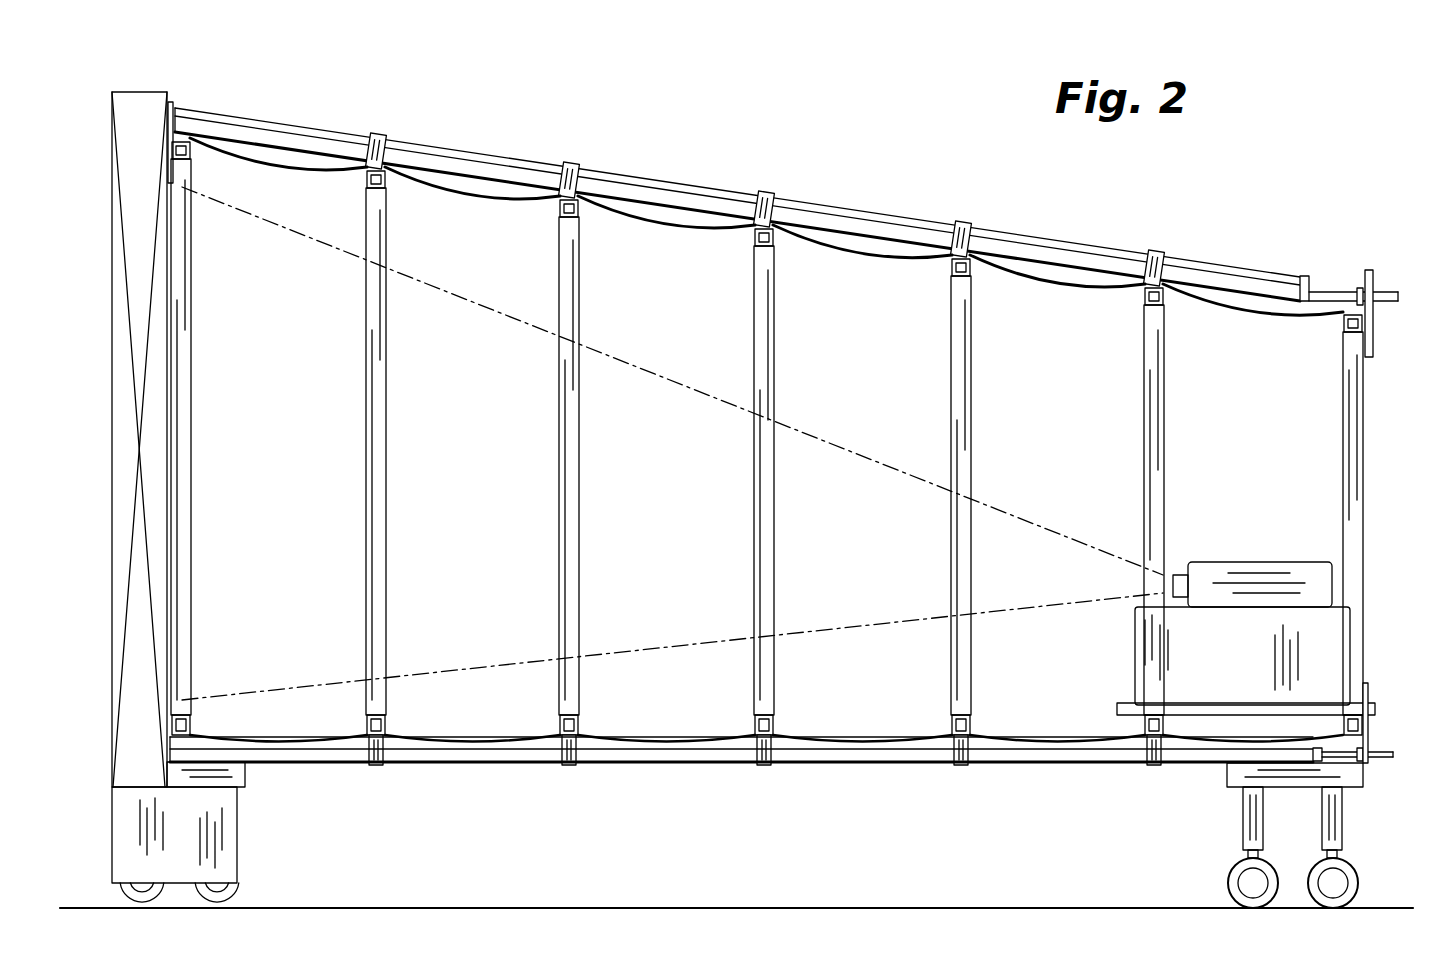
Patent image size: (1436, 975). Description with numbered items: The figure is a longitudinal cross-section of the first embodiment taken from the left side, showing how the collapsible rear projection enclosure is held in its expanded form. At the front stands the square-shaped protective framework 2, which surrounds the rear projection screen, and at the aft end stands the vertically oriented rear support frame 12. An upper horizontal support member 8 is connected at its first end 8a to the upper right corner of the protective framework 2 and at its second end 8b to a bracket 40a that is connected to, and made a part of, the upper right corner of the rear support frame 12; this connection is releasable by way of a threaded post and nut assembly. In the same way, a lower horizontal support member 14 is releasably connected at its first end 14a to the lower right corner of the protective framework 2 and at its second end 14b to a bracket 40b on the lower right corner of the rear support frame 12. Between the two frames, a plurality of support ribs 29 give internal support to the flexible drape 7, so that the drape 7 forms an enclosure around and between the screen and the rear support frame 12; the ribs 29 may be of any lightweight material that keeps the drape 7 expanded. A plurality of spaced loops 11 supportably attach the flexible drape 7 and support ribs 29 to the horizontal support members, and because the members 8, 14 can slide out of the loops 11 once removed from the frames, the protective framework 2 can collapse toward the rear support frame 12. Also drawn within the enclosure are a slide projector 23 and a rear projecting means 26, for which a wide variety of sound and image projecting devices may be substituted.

The protective framework 2 is at (130, 110).
The flexible drape 7 is at (866, 399).
The upper horizontal support member 8 is at (885, 222).
The first end of upper horizontal support member 8a is at (178, 107).
The second end of upper horizontal support member 8b is at (1330, 284).
The spaced loops 11 is at (1143, 257).
The rear support frame 12 is at (1348, 448).
The lower horizontal support member 14 is at (897, 753).
The first end of lower horizontal support member 14a is at (183, 757).
The second end of lower horizontal support member 14b is at (1320, 762).
The slide projector 23 is at (1283, 570).
The rear projecting means 26 is at (1158, 643).
The support ribs 29 is at (566, 237).
The bracket 40a is at (1370, 275).
The bracket 40b is at (1367, 740).